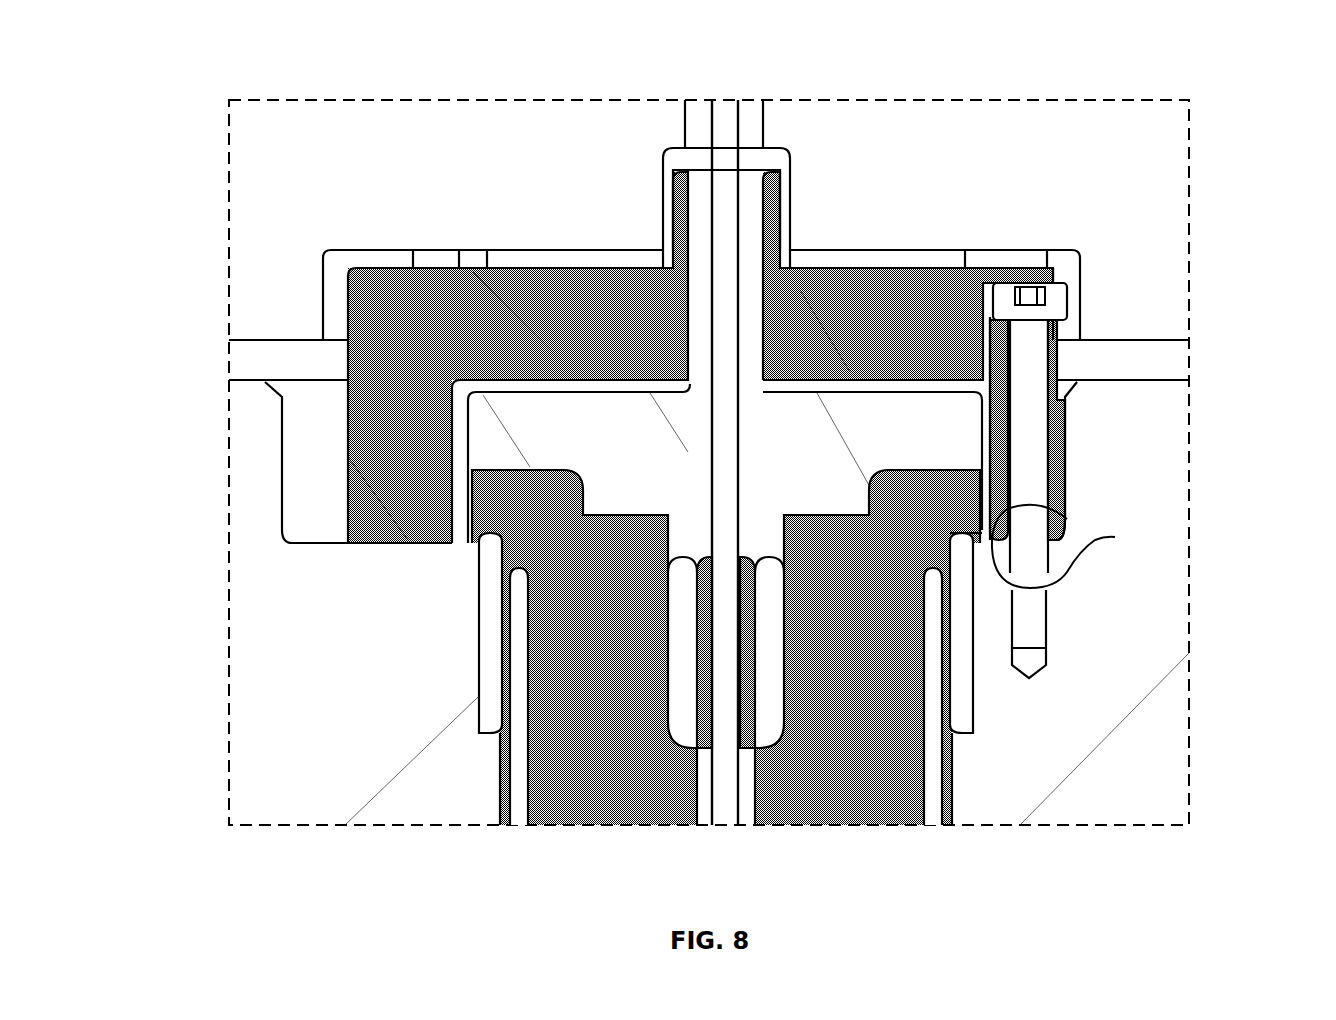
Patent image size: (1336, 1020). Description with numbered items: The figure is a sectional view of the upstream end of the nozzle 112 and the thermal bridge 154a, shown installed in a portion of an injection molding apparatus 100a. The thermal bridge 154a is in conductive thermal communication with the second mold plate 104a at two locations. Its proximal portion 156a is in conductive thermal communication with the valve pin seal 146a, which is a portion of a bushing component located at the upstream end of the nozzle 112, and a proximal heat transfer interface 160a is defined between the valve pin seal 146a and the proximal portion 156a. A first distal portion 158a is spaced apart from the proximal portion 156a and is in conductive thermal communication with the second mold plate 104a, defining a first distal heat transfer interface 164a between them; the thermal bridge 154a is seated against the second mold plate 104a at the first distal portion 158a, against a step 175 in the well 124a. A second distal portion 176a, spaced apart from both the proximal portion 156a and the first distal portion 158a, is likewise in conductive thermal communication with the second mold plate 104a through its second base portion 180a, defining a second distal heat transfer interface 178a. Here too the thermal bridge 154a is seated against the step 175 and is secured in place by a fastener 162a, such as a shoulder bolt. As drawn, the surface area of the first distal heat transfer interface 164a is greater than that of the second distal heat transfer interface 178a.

The injection molding apparatus 100a is at (1203, 100).
The second mold plate 104a is at (297, 638).
The nozzle 112 is at (543, 740).
The well 124a is at (499, 803).
The valve pin seal 146a is at (752, 206).
The thermal bridge 154a is at (524, 250).
The proximal portion 156a is at (657, 308).
The first distal portion 158a is at (372, 283).
The proximal heat transfer interface 160a is at (770, 340).
The fastener 162a is at (1033, 360).
The first distal heat transfer interface 164a is at (382, 543).
The step 175 is at (1067, 519).
The second distal portion 176a is at (1020, 278).
The second distal heat transfer interface 178a is at (1115, 537).
The second base portion 180a is at (1057, 467).